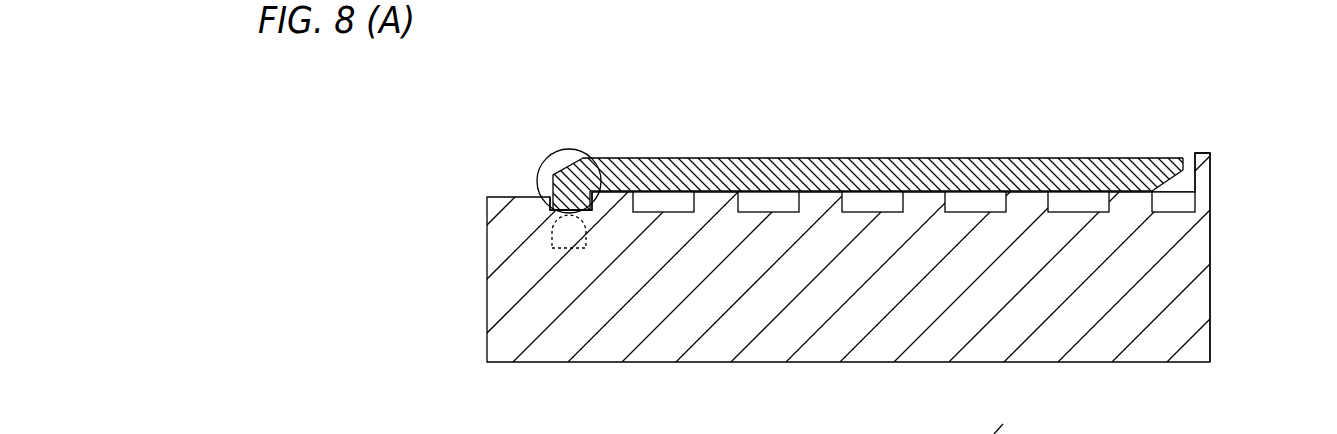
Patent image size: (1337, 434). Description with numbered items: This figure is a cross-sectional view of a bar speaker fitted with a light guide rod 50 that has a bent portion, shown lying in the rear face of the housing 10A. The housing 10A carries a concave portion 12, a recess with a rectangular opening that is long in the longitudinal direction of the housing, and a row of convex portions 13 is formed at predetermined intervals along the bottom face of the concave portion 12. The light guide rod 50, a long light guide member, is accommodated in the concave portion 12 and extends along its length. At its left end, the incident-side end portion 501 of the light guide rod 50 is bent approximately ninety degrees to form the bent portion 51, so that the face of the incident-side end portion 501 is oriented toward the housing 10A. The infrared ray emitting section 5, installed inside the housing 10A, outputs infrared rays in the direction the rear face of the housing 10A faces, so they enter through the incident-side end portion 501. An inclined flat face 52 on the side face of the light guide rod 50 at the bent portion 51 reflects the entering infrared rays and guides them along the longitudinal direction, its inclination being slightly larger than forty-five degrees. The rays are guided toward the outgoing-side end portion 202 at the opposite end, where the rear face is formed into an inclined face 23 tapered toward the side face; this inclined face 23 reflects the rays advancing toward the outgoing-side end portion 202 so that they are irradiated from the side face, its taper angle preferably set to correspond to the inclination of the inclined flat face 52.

The housing 10A is at (497, 197).
The concave portion 12 is at (1193, 155).
The convex portions 13 is at (628, 190).
The light guide rod 50 is at (612, 158).
The bent portion 51 is at (568, 148).
The inclined flat face 52 is at (563, 168).
The incident-side end portion 501 is at (552, 212).
The infrared ray emitting section 5 is at (552, 247).
The outgoing-side end portion 202 is at (1184, 167).
The inclined face 23 is at (1165, 183).